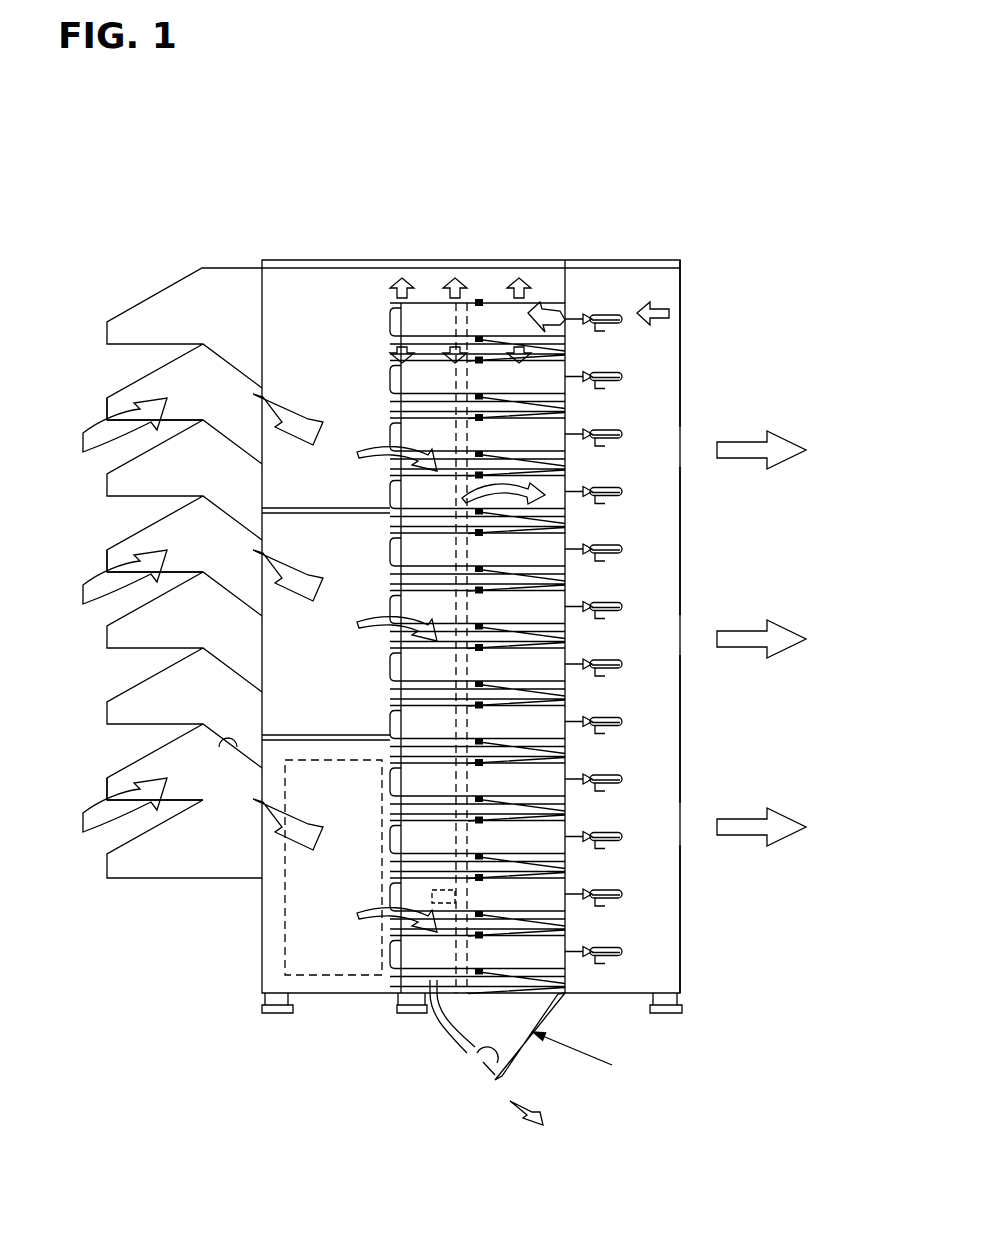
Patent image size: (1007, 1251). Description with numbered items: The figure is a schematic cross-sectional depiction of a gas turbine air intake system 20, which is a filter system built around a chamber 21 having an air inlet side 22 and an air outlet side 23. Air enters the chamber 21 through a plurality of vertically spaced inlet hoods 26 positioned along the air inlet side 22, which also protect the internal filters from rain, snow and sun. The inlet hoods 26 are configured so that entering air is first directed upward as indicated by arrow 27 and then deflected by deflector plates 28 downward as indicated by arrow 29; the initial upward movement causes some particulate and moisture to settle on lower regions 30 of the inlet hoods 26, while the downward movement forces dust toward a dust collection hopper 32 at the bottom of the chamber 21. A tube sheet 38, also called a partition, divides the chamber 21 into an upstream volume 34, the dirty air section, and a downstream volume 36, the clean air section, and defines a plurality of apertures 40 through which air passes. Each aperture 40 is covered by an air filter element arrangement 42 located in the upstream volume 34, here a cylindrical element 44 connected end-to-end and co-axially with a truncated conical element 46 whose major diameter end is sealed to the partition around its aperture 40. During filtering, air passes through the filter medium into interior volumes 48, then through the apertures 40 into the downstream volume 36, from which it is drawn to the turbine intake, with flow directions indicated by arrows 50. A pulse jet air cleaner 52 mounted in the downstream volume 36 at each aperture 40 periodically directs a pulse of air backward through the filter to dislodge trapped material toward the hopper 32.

The gas turbine air intake system 20 is at (578, 160).
The chamber 21 is at (340, 258).
The air inlet side 22 is at (135, 305).
The air outlet side 23 is at (683, 360).
The inlet hoods 26 is at (107, 403).
The arrow indicating upward direction 27 is at (82, 435).
The deflector plates 28 is at (227, 360).
The arrow indicating downward direction 29 is at (292, 407).
The lower regions 30 is at (120, 467).
The dust collection hopper 32 is at (510, 1060).
The upstream volume 34 is at (325, 344).
The downstream volume 36 is at (654, 356).
The tube sheet 38 is at (563, 275).
The apertures 40 is at (565, 422).
The air filter element arrangement 42 is at (390, 302).
The cylindrical element 44 is at (428, 298).
The truncated conical element 46 is at (498, 298).
The interior volumes 48 is at (440, 500).
The output direction 50 is at (680, 427).
The pulse jet air cleaner 52 is at (622, 488).